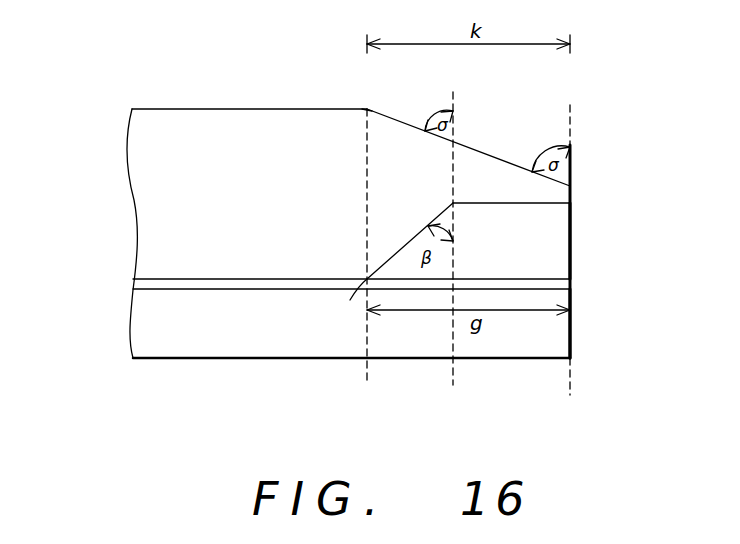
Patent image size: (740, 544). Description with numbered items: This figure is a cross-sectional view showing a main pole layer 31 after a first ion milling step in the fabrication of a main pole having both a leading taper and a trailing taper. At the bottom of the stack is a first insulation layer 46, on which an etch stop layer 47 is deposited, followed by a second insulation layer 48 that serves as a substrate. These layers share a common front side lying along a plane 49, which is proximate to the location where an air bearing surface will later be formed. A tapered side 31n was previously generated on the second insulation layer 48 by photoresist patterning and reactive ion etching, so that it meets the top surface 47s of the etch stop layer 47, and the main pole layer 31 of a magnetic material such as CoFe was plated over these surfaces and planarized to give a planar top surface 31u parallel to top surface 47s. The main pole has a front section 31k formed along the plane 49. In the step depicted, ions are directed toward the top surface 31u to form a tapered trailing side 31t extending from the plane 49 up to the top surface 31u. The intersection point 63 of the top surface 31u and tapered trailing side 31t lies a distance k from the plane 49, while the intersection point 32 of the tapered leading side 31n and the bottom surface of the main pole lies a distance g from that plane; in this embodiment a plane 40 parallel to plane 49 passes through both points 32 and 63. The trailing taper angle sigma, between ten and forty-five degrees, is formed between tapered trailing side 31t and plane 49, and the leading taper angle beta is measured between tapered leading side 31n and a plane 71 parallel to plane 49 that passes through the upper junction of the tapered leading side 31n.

The main pole layer 31 is at (148, 205).
The planar top surface 31u is at (193, 108).
The intersection point 63 is at (367, 109).
The tapered trailing side 31t is at (498, 158).
The plane 40 is at (367, 240).
The plane 71 is at (455, 240).
The plane 49 is at (570, 105).
The front section 31k is at (556, 190).
The second insulation layer 48 is at (556, 262).
The first insulation layer 46 is at (556, 332).
The top surface of the etch stop layer 47s is at (150, 279).
The etch stop layer 47 is at (140, 288).
The intersection point 32 is at (350, 300).
The tapered leading side 31n is at (402, 248).